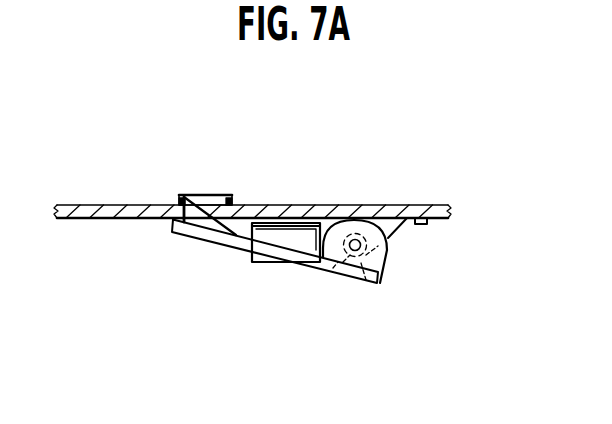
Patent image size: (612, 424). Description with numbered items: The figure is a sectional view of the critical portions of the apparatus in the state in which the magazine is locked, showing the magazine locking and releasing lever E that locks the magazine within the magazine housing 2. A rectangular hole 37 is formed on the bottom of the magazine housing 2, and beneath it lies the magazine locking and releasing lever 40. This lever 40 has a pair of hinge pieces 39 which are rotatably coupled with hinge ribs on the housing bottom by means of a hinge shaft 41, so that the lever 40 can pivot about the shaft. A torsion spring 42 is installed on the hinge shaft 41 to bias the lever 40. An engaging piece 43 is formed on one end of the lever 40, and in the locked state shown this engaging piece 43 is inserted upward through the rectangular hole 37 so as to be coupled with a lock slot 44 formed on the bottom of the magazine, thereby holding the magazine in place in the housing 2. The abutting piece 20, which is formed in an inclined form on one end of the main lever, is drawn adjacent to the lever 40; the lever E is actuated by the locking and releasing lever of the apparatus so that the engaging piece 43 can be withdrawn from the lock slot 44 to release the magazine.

The magazine housing 2 is at (111, 218).
The abutting piece 20 is at (307, 242).
The rectangular hole 37 is at (231, 195).
The hinge pieces 39 is at (372, 283).
The magazine locking and releasing lever 40 is at (237, 248).
The hinge shaft 41 is at (355, 238).
The torsion spring 42 is at (412, 205).
The engaging piece 43 is at (191, 196).
The lock slot 44 is at (217, 195).
The magazine locking and releasing lever E is at (251, 303).